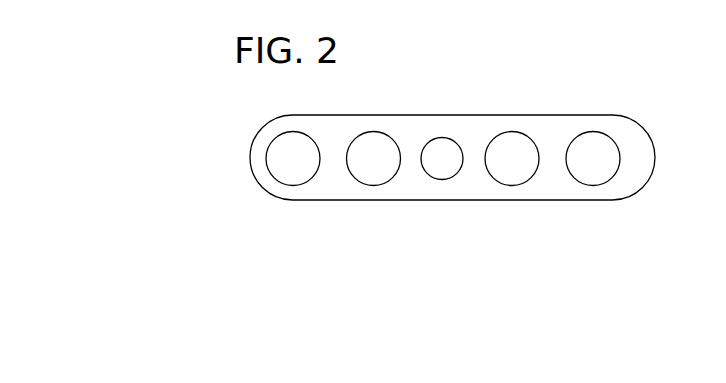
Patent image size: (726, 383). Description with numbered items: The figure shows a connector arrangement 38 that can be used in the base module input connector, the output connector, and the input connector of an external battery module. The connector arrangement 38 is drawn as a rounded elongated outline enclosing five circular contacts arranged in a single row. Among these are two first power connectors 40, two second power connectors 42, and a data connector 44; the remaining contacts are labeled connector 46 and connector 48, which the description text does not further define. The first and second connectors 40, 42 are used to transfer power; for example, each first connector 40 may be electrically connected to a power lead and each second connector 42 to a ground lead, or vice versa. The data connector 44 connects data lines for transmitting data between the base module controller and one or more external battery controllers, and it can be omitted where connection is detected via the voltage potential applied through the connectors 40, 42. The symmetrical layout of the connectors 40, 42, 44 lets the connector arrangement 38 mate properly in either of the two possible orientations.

The sensor array / housing 38 is at (582, 98).
The first sensor 40 is at (304, 168).
The second sensor 42 is at (384, 168).
The third sensor 44 is at (453, 168).
The fourth sensor 46 is at (523, 168).
The fifth sensor 48 is at (604, 168).